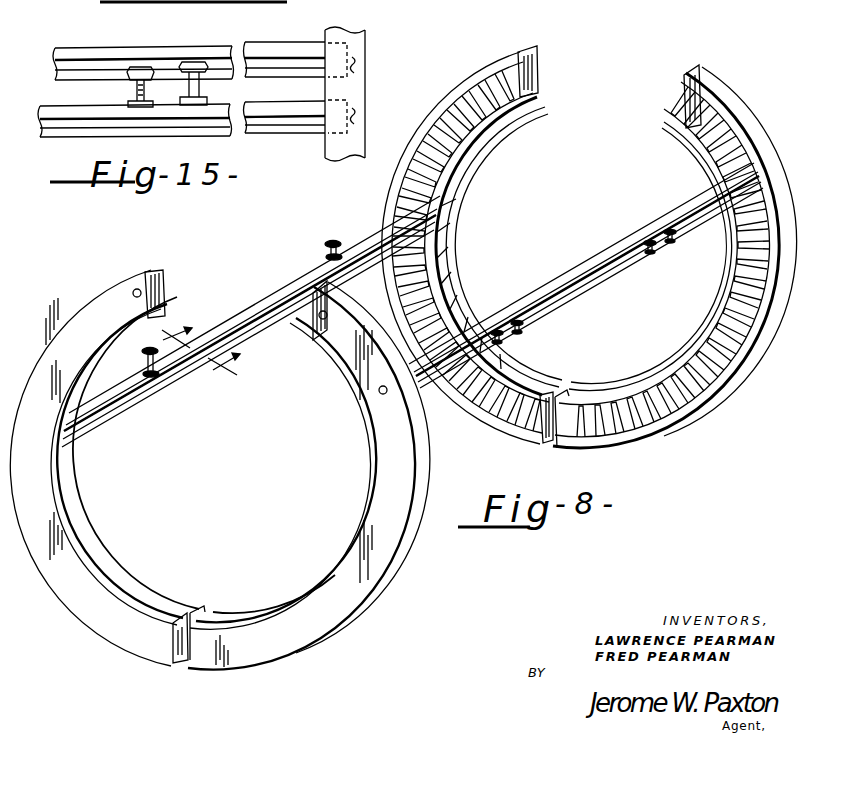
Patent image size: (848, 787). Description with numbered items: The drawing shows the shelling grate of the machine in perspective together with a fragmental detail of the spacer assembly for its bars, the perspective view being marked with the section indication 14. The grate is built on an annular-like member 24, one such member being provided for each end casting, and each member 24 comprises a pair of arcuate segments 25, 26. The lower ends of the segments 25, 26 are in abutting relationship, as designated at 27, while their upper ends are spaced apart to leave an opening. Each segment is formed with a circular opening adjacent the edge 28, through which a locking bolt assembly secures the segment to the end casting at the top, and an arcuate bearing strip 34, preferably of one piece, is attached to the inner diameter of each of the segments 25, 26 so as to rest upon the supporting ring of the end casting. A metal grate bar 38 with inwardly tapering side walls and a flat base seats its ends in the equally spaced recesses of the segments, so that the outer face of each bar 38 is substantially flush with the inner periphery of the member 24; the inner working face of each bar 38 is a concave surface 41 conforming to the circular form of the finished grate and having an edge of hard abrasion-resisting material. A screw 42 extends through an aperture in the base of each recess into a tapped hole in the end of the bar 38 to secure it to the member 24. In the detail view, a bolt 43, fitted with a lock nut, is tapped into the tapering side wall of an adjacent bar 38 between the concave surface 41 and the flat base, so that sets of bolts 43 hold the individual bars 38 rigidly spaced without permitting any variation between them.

In FIG. 8, the section line arrows 14 is at (190, 359).
In FIG. 8, the annular-like member 24 is at (172, 290).
In FIG. 15, the arcuate segment 25 is at (350, 30).
In FIG. 8, the arcuate segment 25 is at (86, 316).
In FIG. 8, the arcuate segment 26 is at (327, 618).
In FIG. 8, the abutting relationship of lower ends 27 is at (184, 665).
In FIG. 8, the edge 28 is at (309, 317).
In FIG. 8, the arcuate bearing strip 34 is at (153, 600).
In FIG. 15, the grate bar 38 is at (273, 55).
In FIG. 8, the grate bar 38 is at (241, 315).
In FIG. 8, the concave surface 41 is at (258, 324).
In FIG. 15, the screw 42 is at (368, 74).
In FIG. 15, the bolt 43 is at (207, 62).